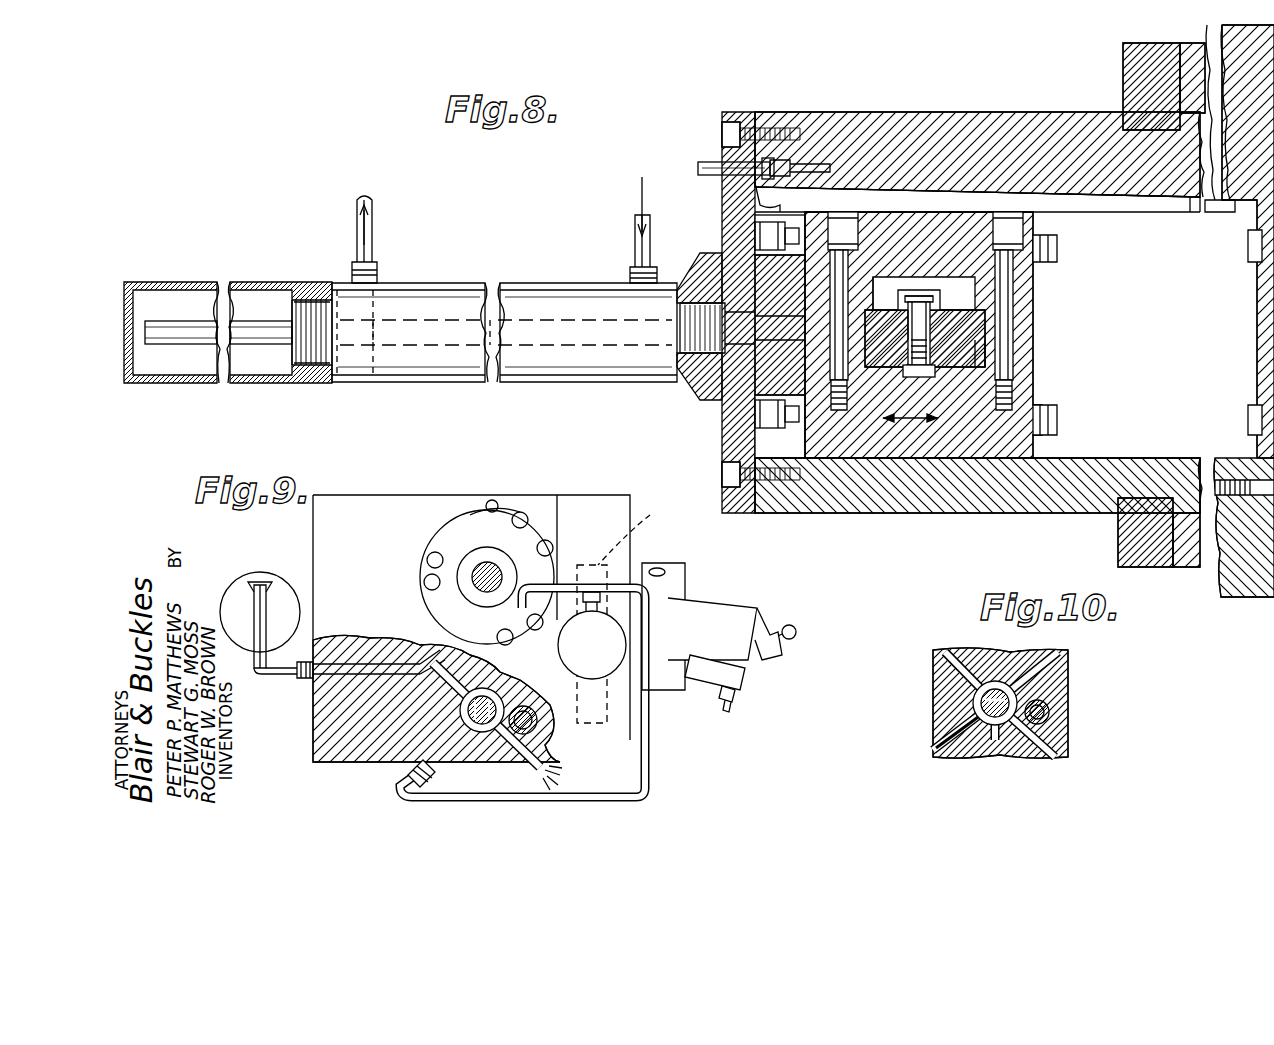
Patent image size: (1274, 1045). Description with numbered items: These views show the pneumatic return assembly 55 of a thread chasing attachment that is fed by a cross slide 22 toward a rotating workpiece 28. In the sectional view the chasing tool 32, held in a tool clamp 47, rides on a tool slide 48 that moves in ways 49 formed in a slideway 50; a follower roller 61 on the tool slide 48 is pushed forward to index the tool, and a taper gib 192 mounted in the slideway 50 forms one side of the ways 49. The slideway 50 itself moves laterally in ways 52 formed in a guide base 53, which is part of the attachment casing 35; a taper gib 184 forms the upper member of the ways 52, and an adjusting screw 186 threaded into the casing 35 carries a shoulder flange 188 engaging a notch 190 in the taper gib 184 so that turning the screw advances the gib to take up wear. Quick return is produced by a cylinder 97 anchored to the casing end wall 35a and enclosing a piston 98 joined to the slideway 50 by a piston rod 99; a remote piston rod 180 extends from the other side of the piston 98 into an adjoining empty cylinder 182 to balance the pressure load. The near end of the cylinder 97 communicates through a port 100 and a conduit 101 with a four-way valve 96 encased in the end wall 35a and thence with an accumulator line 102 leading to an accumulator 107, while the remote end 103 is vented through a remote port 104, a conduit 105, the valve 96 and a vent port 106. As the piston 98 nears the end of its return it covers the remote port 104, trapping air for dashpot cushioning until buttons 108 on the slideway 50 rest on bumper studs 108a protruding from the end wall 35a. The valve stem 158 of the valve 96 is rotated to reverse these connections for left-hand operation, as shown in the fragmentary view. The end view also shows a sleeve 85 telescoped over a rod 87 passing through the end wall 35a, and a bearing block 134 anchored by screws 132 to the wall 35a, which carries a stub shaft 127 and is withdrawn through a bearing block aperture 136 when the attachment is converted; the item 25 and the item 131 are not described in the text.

In FIG. 8, the cross slide 22 is at (1222, 32).
In FIG. 8, the mounting block 25 is at (1122, 55).
In FIG. 9, the workpiece 28 is at (797, 632).
In FIG. 9, the chasing tool 32 is at (772, 634).
In FIG. 8, the attachment casing 35 is at (1027, 112).
In FIG. 9, the end wall 35a is at (345, 520).
In FIG. 10, the end wall 35a is at (1070, 680).
In FIG. 9, the tool clamp 47 is at (716, 622).
In FIG. 8, the tool slide 48 is at (876, 296).
In FIG. 8, the ways 49 is at (985, 345).
In FIG. 8, the slideway 50 is at (930, 290).
In FIG. 9, the slideway 50 is at (631, 530).
In FIG. 8, the ways 52 is at (1118, 214).
In FIG. 8, the guide base 53 is at (1020, 495).
In FIG. 8, the pneumatic return assembly 55 is at (270, 266).
In FIG. 9, the pneumatic return assembly 55 is at (668, 718).
In FIG. 8, the follower roller 61 is at (955, 290).
In FIG. 9, the sleeve 85 is at (548, 725).
In FIG. 10, the sleeve 85 is at (1045, 718).
In FIG. 9, the rod 87 is at (540, 720).
In FIG. 10, the rod 87 is at (1050, 710).
In FIG. 9, the four-way valve 96 is at (476, 686).
In FIG. 10, the four-way valve 96 is at (968, 700).
In FIG. 8, the cylinder 97 is at (510, 284).
In FIG. 9, the cylinder 97 is at (592, 645).
In FIG. 8, the piston 98 is at (380, 356).
In FIG. 8, the piston rod 99 is at (493, 372).
In FIG. 8, the port 100 is at (632, 278).
In FIG. 8, the conduit 101 is at (636, 230).
In FIG. 9, the conduit 101 is at (643, 572).
In FIG. 10, the conduit 101 is at (948, 760).
In FIG. 9, the accumulator line 102 is at (265, 678).
In FIG. 10, the accumulator line 102 is at (965, 668).
In FIG. 8, the remote end 103 is at (322, 300).
In FIG. 8, the remote port 104 is at (378, 276).
In FIG. 8, the conduit 105 is at (372, 212).
In FIG. 9, the conduit 105 is at (555, 582).
In FIG. 10, the conduit 105 is at (1030, 668).
In FIG. 9, the vent port 106 is at (560, 777).
In FIG. 10, the vent port 106 is at (1036, 758).
In FIG. 9, the accumulator 107 is at (260, 576).
In FIG. 8, the buttons 108 is at (760, 219).
In FIG. 8, the bumper studs 108a is at (762, 243).
In FIG. 9, the stub shaft 127 is at (490, 565).
In FIG. 9, the disc 131 is at (470, 508).
In FIG. 9, the screws 132 is at (427, 562).
In FIG. 9, the bearing block 134 is at (445, 522).
In FIG. 9, the bearing block aperture 136 is at (497, 500).
In FIG. 9, the valve stem 158 is at (468, 708).
In FIG. 10, the valve stem 158 is at (992, 742).
In FIG. 8, the remote piston rod 180 is at (162, 322).
In FIG. 8, the empty cylinder 182 is at (250, 384).
In FIG. 8, the taper gib 184 is at (1183, 210).
In FIG. 8, the adjusting screw 186 is at (706, 162).
In FIG. 8, the shoulder flange 188 is at (798, 150).
In FIG. 8, the notch 190 is at (755, 196).
In FIG. 8, the taper gib 192 is at (990, 365).